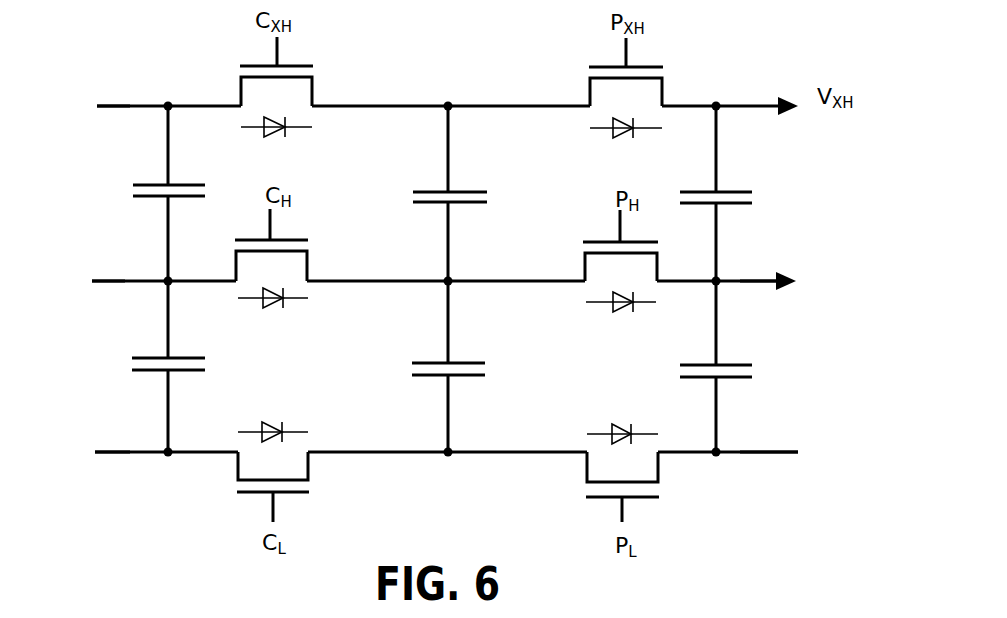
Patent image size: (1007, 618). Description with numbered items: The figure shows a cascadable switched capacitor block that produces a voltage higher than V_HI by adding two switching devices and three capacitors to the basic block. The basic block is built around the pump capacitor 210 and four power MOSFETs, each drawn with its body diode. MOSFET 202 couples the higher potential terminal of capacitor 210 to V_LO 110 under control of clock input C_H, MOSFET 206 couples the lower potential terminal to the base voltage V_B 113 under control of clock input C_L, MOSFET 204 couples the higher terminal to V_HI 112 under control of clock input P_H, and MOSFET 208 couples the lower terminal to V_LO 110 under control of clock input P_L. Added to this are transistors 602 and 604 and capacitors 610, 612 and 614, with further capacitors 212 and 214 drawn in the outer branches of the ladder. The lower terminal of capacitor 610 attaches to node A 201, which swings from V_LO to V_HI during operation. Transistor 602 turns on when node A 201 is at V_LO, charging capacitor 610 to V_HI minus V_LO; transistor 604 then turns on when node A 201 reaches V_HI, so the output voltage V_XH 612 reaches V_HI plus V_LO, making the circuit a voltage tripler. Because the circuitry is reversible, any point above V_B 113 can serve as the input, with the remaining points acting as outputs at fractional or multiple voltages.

The transistor 602 is at (276, 87).
The transistor 604 is at (626, 88).
The MOSFET 202 is at (271, 258).
The MOSFET 204 is at (620, 261).
The MOSFET 206 is at (273, 472).
The MOSFET 208 is at (622, 473).
The capacitor / output voltage V_XH 612 is at (471, 161).
The capacitor 610 is at (427, 196).
The capacitor 614 is at (740, 197).
The capacitor 212 is at (143, 367).
The capacitor 210 is at (425, 371).
The capacitor 214 is at (739, 373).
The node A 201 is at (449, 279).
The V_HI 112 is at (445, 195).
The V_LO 110 is at (444, 371).
The V_B 113 is at (91, 451).